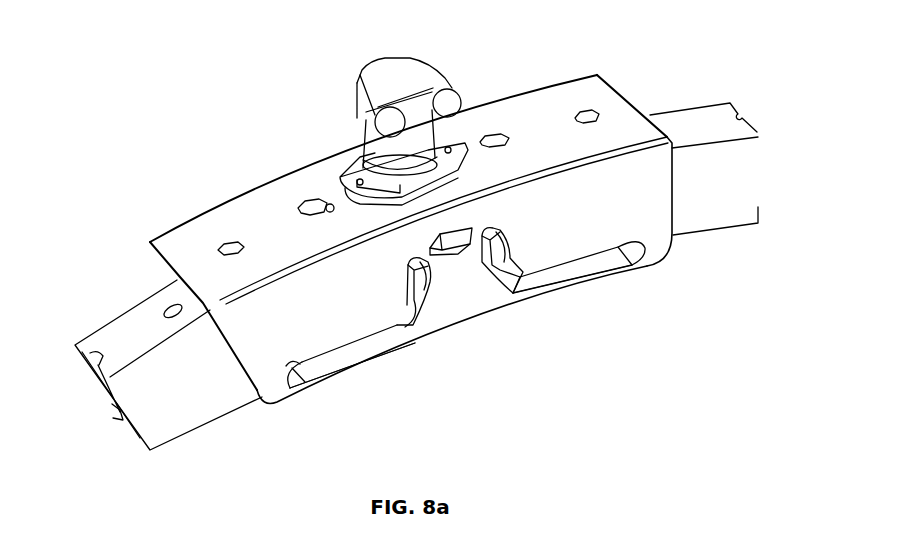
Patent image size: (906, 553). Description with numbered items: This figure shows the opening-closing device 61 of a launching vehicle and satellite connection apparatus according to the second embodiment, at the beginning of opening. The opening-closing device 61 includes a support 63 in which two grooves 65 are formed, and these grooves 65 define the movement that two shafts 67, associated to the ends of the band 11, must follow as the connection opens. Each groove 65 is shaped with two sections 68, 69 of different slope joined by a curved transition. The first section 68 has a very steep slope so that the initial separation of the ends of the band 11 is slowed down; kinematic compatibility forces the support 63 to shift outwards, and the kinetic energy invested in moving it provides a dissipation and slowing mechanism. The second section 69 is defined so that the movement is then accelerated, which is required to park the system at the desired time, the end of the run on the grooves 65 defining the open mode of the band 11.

The band 11 is at (708, 128).
The opening-closing device 61 is at (228, 152).
The support 63 is at (536, 103).
The grooves 65 is at (382, 318).
The shafts 67 is at (423, 282).
The first section 68 is at (420, 312).
The second section 69 is at (342, 358).